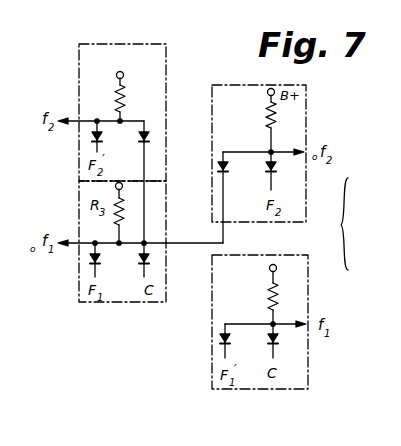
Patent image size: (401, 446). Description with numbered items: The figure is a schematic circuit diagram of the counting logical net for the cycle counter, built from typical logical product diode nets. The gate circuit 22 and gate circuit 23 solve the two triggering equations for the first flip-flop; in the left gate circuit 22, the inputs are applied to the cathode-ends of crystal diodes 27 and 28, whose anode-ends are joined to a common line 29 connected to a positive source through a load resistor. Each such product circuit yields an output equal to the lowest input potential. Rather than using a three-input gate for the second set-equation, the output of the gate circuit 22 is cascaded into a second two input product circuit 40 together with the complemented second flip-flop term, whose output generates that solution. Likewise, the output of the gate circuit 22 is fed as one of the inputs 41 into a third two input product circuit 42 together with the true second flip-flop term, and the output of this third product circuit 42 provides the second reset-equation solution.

The second two input product circuit 40 is at (166, 118).
The gate circuit 22 is at (93, 303).
The common line 29 is at (116, 242).
The crystal diode 27 is at (99, 264).
The crystal diode 28 is at (151, 262).
The third two input product circuit 42 is at (306, 182).
The input 41 is at (224, 202).
The gate circuit 23 is at (265, 389).